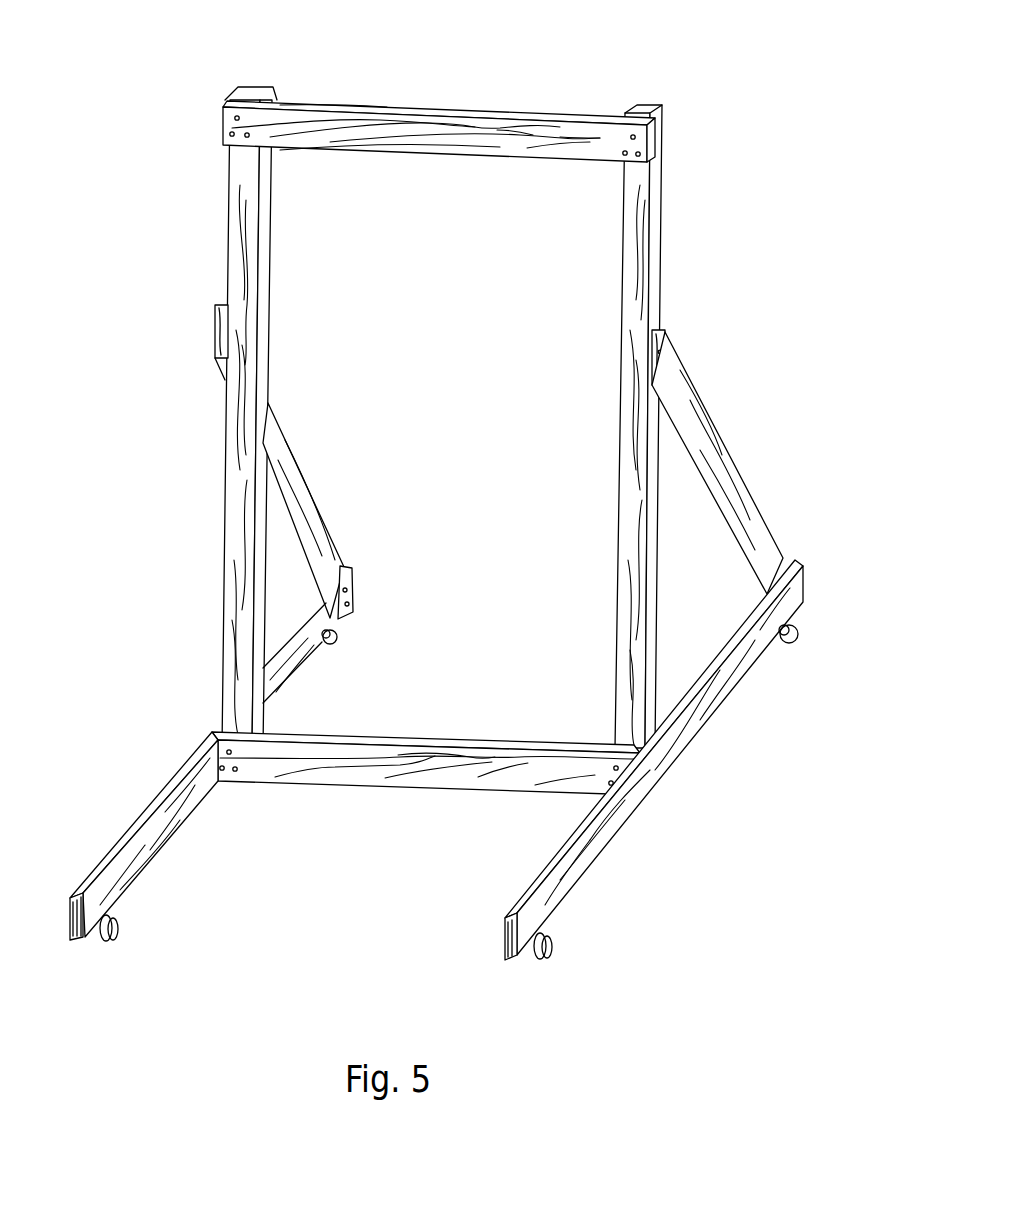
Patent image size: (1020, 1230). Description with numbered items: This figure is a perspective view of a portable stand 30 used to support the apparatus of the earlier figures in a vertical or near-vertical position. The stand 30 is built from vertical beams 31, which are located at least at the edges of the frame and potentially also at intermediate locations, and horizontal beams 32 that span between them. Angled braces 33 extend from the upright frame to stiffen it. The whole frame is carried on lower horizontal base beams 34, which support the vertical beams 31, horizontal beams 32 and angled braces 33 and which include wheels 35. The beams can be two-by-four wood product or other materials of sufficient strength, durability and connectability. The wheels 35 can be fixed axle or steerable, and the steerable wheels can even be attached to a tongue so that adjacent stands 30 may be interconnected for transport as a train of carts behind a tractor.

The portable stand 30 is at (442, 498).
The vertical beams 31 is at (663, 258).
The horizontal beams 32 is at (433, 107).
The angled braces 33 is at (290, 456).
The lower horizontal base beams 34 is at (160, 784).
The wheels 35 is at (340, 642).